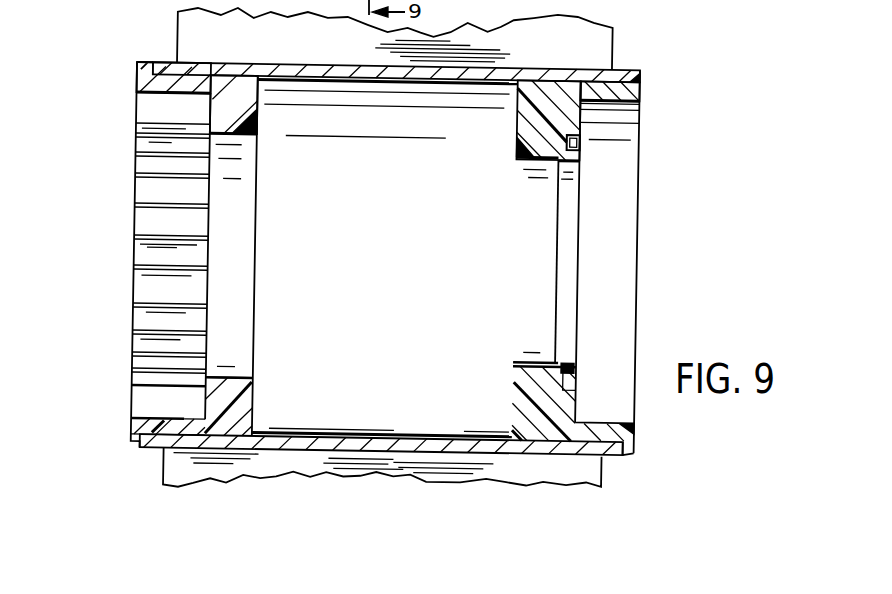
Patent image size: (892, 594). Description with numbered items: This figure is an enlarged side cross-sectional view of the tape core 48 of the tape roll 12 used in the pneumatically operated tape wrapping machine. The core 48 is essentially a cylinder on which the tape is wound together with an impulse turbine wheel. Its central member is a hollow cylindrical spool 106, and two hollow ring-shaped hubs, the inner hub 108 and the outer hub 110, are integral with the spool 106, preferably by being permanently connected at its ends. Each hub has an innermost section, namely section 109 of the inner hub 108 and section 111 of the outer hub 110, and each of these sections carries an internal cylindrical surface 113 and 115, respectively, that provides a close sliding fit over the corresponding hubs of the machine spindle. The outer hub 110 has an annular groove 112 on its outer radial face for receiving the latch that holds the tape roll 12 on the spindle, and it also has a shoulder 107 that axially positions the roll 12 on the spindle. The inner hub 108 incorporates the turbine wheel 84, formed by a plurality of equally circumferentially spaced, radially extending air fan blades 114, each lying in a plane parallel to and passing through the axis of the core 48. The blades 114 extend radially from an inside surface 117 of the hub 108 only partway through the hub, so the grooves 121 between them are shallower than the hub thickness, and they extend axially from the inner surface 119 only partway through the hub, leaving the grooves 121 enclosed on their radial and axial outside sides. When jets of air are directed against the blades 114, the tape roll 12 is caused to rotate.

The tape core 48 is at (653, 50).
The spool 106 is at (293, 68).
The inner hub 108 is at (197, 83).
The inner surface 119 is at (145, 73).
The innermost section 109 is at (250, 127).
The internal cylindrical surface 113 is at (240, 138).
The inside surface 117 is at (147, 128).
The air fan blades 114 is at (150, 229).
The turbine wheel 84 is at (131, 388).
The grooves 121 is at (142, 402).
The outer hub 110 is at (542, 88).
The innermost section 111 is at (521, 126).
The annular groove 112 is at (578, 144).
The internal cylindrical surface 115 is at (530, 180).
The shoulder 107 is at (572, 364).
The tape roll 12 is at (648, 238).